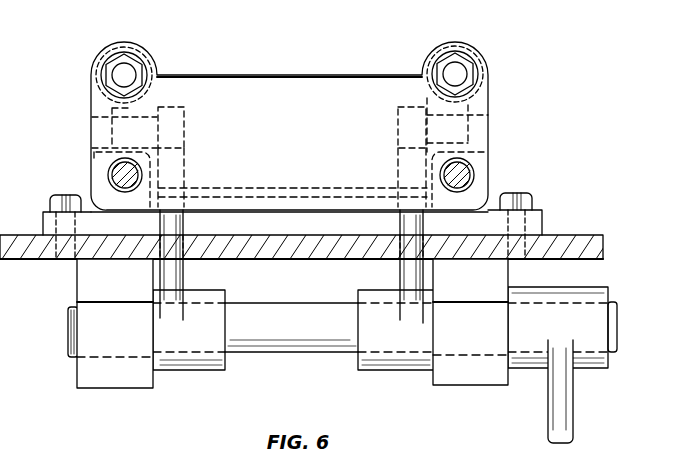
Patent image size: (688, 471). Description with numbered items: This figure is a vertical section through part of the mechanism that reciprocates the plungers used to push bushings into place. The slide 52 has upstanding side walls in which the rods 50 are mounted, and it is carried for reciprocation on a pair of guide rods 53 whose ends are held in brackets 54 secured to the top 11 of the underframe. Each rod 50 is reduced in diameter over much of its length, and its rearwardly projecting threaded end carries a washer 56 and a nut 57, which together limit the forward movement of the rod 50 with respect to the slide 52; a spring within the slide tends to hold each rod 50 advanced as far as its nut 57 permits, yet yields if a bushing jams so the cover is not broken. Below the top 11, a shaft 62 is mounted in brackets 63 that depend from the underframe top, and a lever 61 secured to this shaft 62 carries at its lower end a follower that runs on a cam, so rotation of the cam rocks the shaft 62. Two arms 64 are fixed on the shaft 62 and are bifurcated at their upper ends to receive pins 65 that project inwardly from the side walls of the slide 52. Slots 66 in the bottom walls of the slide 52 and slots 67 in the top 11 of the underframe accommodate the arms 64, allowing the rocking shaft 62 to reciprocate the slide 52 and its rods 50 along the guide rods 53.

The top of the underframe 11 is at (604, 246).
The rod 50 is at (118, 75).
The slide 52 is at (294, 90).
The guide rod 53 is at (108, 172).
The bracket 54 is at (540, 218).
The washer 56 is at (128, 53).
The nut 57 is at (107, 62).
The lever 61 is at (567, 412).
The shaft 62 is at (327, 353).
The bracket 63 is at (100, 378).
The arm 64 is at (185, 277).
The pin 65 is at (184, 124).
The slot 66 is at (186, 193).
The slot 67 is at (190, 248).